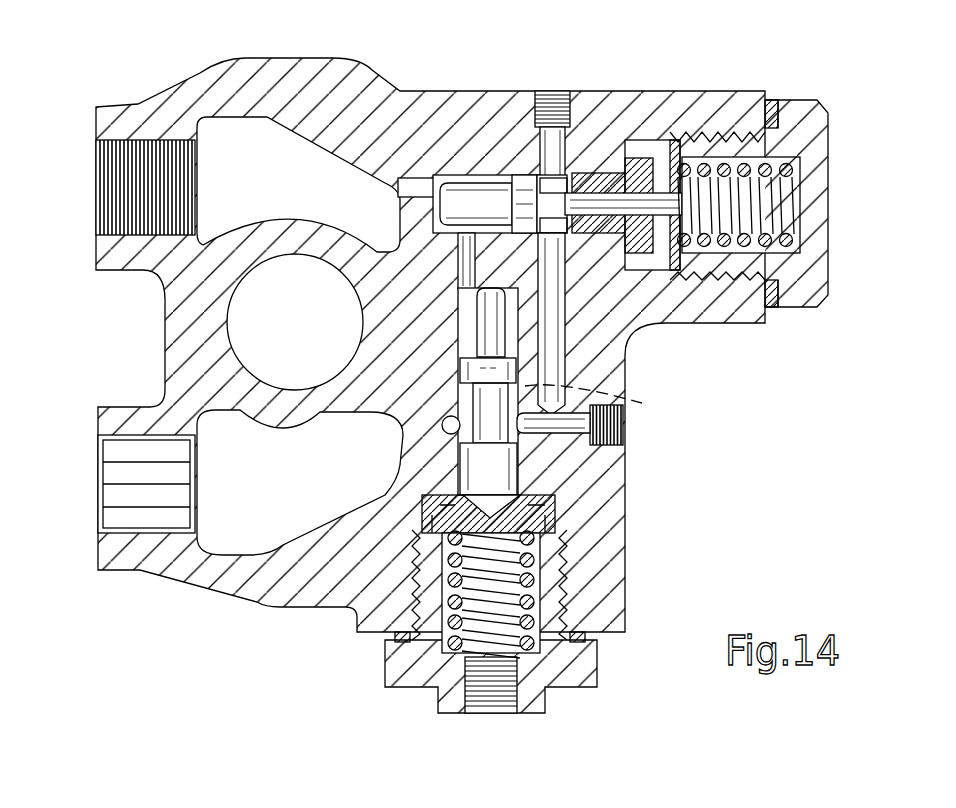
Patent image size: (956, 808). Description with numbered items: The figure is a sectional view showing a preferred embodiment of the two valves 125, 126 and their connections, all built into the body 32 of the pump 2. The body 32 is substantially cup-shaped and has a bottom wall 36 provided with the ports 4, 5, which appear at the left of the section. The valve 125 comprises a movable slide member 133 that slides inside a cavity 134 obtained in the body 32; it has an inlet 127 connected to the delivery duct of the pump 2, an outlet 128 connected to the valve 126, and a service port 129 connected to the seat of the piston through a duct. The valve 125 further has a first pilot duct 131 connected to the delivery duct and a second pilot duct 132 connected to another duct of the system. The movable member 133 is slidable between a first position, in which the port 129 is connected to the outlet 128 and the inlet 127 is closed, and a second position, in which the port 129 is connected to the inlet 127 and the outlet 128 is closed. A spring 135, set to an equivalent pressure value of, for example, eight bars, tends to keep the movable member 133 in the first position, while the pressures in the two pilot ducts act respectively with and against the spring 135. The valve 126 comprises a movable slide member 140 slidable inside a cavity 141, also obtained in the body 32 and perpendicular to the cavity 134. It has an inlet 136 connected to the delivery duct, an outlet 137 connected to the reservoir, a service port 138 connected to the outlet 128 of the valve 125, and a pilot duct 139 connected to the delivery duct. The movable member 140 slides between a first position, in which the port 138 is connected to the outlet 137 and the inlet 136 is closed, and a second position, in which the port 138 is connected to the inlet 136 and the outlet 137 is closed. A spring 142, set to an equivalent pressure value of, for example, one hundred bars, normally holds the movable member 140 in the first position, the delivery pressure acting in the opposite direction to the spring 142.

The pump 2 is at (693, 70).
The port 4 is at (123, 528).
The port 5 is at (128, 143).
The body 32 is at (293, 582).
The bottom wall 36 is at (372, 592).
The valve 125 is at (539, 452).
The valve 126 is at (697, 110).
The inlet 127 is at (455, 298).
The outlet 128 is at (530, 425).
The service port 129 is at (642, 403).
The first pilot duct 131 is at (473, 680).
The second pilot duct 132 is at (526, 193).
The movable slide member 133 is at (500, 463).
The cavity 134 is at (508, 347).
The spring 135 is at (537, 637).
The inlet 136 is at (442, 177).
The outlet 137 is at (551, 180).
The service port 138 is at (551, 240).
The pilot duct 139 is at (410, 183).
The movable slide member 140 is at (545, 165).
The cavity 141 is at (461, 256).
The spring 142 is at (773, 200).